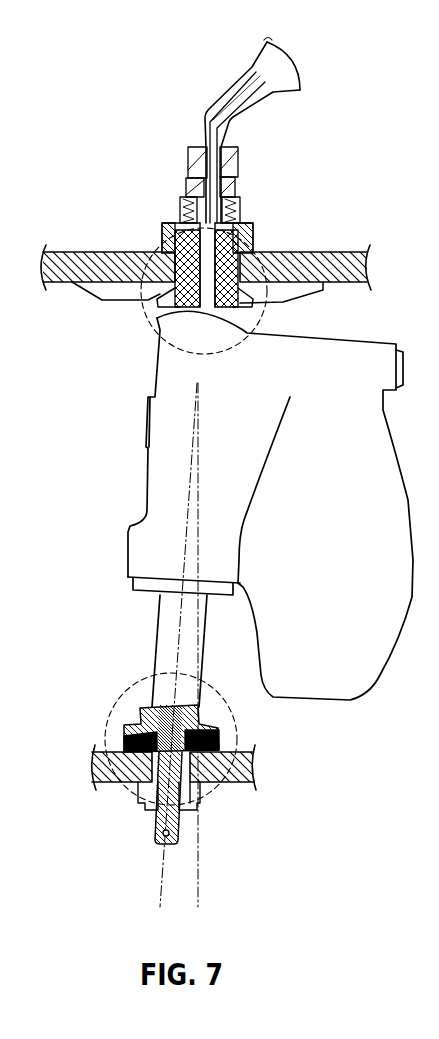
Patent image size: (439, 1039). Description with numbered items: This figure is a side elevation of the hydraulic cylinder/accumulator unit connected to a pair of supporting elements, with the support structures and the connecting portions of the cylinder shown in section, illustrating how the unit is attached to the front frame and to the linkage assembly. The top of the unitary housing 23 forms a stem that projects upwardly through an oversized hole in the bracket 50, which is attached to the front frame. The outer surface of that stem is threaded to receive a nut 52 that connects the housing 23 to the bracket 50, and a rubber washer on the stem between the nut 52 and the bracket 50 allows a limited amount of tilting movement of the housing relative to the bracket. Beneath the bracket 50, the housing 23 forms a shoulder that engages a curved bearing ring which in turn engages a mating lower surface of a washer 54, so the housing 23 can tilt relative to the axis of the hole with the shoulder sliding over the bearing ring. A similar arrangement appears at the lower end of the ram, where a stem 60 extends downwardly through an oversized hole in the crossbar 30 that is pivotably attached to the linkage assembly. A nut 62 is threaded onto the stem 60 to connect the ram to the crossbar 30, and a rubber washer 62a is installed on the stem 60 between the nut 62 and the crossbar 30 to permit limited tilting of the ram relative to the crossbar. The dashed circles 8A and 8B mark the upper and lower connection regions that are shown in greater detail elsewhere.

The unitary housing 23 is at (340, 425).
The crossbar 30 is at (232, 783).
The bracket 50 is at (108, 253).
The nut 52 is at (247, 243).
The washer 54 is at (107, 300).
The stem 60 is at (157, 830).
The nut 62 is at (187, 807).
The rubber washer 62a is at (137, 795).
The detail region of FIG. 8A is at (168, 338).
The detail region of FIG. 8B is at (130, 690).